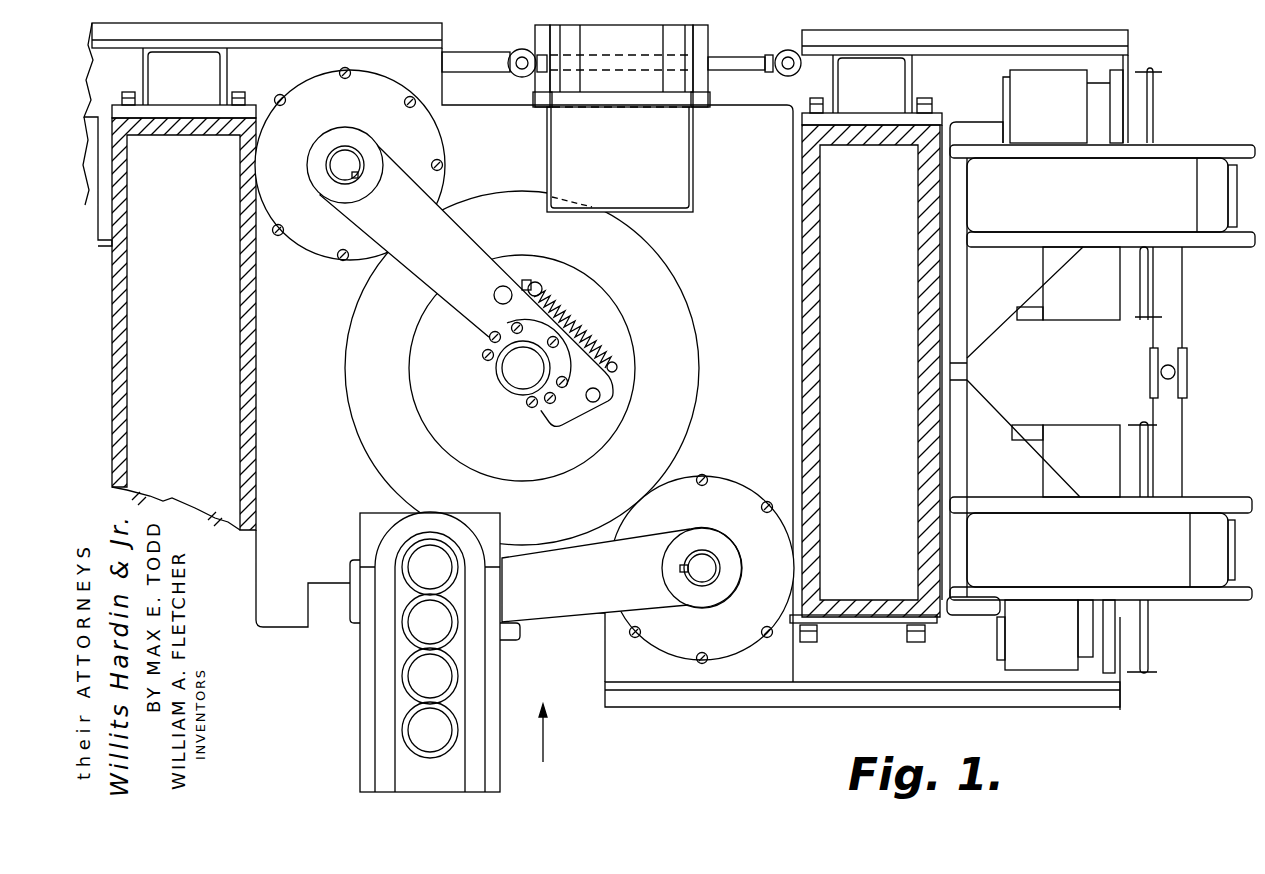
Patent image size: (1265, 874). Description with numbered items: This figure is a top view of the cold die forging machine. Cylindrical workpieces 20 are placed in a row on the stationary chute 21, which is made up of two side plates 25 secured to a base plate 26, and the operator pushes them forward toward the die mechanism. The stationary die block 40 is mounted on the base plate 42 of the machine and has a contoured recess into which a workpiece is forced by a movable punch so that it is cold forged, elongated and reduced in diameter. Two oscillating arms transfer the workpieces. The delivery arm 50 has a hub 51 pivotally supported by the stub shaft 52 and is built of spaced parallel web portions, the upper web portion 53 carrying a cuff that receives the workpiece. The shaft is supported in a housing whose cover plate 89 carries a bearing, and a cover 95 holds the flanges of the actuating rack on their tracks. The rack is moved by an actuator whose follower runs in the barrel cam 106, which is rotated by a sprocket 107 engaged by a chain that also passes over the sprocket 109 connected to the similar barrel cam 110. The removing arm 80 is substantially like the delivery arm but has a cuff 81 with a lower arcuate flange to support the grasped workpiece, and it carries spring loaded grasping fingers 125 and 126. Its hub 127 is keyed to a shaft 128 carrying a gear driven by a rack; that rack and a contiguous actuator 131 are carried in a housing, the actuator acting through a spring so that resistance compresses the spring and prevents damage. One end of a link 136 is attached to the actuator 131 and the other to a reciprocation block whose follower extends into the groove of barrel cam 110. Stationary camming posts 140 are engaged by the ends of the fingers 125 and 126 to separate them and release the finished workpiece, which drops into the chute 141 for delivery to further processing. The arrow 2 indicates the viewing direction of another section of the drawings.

The direction arrow 2 is at (539, 748).
The cylindrical workpiece 20 is at (441, 555).
The stationary chute 21 is at (397, 728).
The side plates 25 is at (462, 703).
The base plate 26 is at (432, 652).
The stationary die block 40 is at (633, 350).
The base plate 42 is at (282, 615).
The arm 50 is at (640, 578).
The hub 51 is at (710, 542).
The stub shaft 52 is at (708, 563).
The web portion 53 is at (642, 548).
The arm 80 is at (465, 247).
The cuff 81 is at (515, 322).
The cover plate 89 is at (725, 487).
The cover 95 is at (793, 707).
The barrel cam 106 is at (1073, 437).
The sprocket 107 is at (1150, 645).
The sprocket 109 is at (1153, 116).
The barrel cam 110 is at (1060, 93).
The grasping finger 125 is at (480, 353).
The grasping finger 126 is at (523, 405).
The hub 127 is at (325, 187).
The shaft 128 is at (333, 162).
The actuator 131 is at (478, 58).
The link 136 is at (742, 57).
The camming posts 140 is at (540, 110).
The chute 141 is at (679, 162).